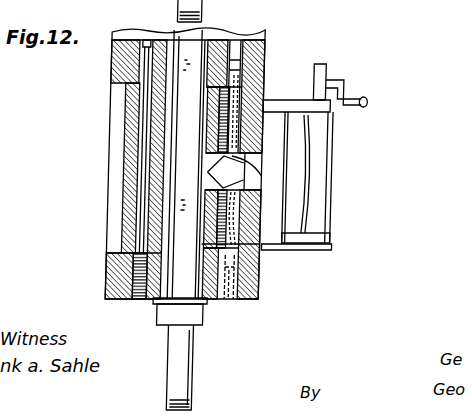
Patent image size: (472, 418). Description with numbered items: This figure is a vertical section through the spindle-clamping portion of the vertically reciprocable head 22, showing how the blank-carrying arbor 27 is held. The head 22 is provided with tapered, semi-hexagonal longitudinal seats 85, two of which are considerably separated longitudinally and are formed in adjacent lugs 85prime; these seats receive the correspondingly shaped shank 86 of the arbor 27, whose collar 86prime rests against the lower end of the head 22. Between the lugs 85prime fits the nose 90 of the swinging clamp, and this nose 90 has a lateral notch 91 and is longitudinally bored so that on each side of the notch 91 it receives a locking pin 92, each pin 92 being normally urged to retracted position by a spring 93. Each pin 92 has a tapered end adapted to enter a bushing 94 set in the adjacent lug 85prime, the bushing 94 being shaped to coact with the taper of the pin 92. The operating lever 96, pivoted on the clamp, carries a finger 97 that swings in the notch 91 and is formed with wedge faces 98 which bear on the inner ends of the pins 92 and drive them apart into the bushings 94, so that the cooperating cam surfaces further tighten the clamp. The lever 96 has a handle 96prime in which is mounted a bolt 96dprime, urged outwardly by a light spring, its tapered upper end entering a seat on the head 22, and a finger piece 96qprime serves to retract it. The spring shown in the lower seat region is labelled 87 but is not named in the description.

The reciprocable head 22 is at (266, 31).
The blank-carrying arbor 27 is at (203, 376).
The tapered longitudinal seat 85 is at (114, 253).
The lug 85prime is at (114, 275).
The shank 86 is at (188, 136).
The collar 86prime is at (215, 322).
The spring 87 is at (131, 172).
The nose 90 is at (269, 255).
The lateral notch 91 is at (271, 106).
The locking pin 92 is at (267, 270).
The spring 93 is at (320, 229).
The bushing 94 is at (251, 302).
The operating lever 96 is at (338, 247).
The handle 96prime is at (334, 153).
The bolt 96dprime is at (324, 72).
The finger piece 96qprime is at (370, 108).
The finger 97 is at (263, 177).
The wedge face 98 is at (272, 162).